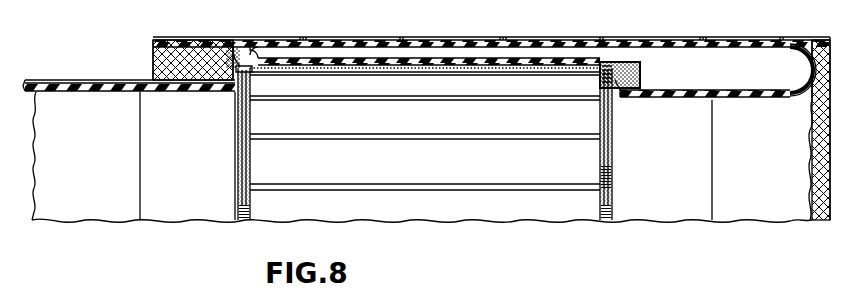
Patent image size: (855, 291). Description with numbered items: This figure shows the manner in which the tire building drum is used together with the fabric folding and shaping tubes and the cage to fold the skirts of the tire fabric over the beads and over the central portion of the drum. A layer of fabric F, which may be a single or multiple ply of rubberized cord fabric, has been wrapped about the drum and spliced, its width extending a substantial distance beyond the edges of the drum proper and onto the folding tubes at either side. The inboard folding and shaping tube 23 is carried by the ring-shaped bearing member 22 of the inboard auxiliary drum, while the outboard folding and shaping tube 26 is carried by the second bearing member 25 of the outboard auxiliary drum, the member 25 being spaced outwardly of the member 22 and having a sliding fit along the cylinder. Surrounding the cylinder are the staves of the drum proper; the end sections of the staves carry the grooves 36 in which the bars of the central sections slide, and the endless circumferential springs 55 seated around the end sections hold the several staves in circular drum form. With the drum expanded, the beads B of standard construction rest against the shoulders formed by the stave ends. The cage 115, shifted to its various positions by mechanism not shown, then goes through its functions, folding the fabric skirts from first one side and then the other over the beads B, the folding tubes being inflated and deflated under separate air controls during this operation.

The cage 115 is at (511, 41).
The beads B is at (232, 55).
The inboard folding and shaping tube 23 is at (642, 76).
The fabric F is at (76, 80).
The outboard folding and shaping tube 26 is at (115, 92).
The second bearing member 25 is at (237, 146).
The endless circumferential springs 55 is at (248, 175).
The ring-shaped bearing member 22 is at (612, 149).
The grooves 36 is at (477, 165).